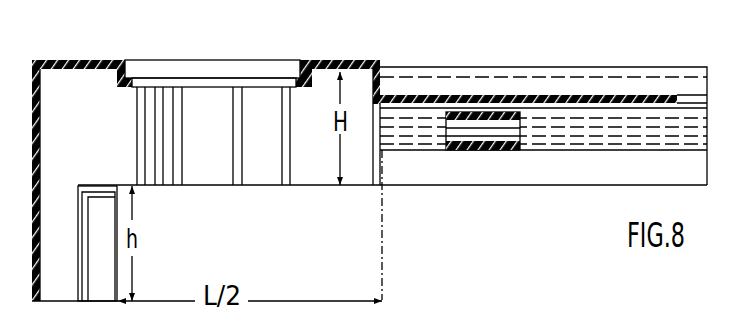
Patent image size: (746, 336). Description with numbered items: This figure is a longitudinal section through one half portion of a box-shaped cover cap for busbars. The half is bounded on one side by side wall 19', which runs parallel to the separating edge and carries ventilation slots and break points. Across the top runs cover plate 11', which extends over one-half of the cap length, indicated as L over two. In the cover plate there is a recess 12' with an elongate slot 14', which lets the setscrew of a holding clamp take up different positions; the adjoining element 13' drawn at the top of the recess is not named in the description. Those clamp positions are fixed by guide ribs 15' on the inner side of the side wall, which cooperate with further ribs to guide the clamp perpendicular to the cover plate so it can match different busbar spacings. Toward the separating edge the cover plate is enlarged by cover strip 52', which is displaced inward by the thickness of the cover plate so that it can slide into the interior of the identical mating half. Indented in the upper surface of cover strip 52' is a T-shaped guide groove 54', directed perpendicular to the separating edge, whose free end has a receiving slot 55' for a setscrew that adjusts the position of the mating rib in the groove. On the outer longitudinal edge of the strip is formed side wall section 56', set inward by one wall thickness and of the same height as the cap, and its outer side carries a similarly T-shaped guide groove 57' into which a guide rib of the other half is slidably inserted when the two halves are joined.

The cover plate 11' is at (369, 102).
The recess 12' is at (200, 95).
The cover plate 13' is at (212, 50).
The elongate slot 14' is at (214, 54).
The guide ribs 15' is at (213, 162).
The side wall 19' is at (75, 180).
The cover strip 52' is at (543, 60).
The guide groove 54' is at (543, 54).
The receiving slot 55' is at (540, 64).
The side wall section 56' is at (543, 168).
The guide groove 57' is at (491, 172).